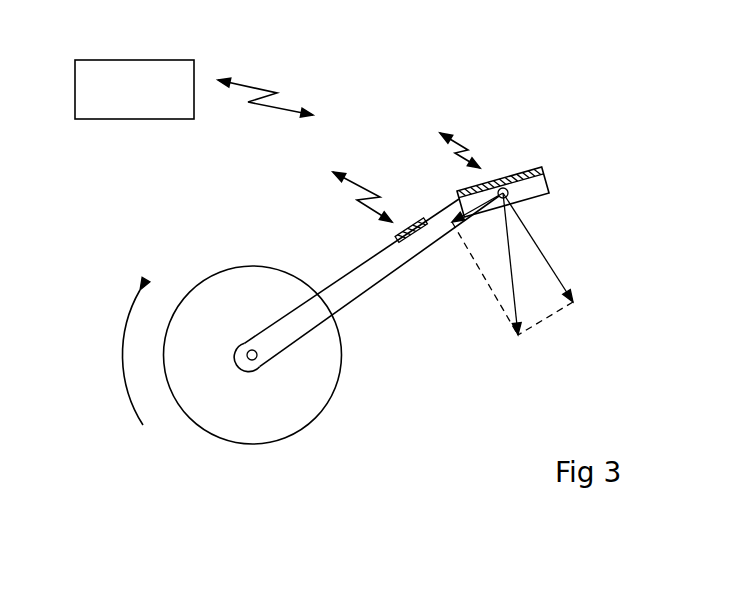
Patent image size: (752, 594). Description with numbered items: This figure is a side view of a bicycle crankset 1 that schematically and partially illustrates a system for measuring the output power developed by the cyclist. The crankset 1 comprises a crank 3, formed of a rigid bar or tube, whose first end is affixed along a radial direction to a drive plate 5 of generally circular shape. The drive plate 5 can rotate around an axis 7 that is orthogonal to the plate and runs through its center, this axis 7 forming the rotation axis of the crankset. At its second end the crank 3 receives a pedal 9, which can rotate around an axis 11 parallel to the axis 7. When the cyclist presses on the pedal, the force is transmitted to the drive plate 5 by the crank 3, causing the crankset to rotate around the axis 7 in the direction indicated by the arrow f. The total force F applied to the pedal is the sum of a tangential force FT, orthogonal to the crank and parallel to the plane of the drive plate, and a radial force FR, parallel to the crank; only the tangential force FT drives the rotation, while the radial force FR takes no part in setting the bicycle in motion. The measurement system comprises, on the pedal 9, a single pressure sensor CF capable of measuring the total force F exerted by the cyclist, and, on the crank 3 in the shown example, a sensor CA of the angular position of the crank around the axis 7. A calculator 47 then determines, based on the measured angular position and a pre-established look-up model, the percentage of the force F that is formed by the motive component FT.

The crankset 1 is at (231, 241).
The crank 3 is at (363, 288).
The drive plate 5 is at (307, 400).
The axis 7 is at (257, 362).
The pedal 9 is at (538, 183).
The axis 11 is at (513, 197).
The calculator 47 is at (93, 105).
The sensor of the angular position of the crank CA is at (417, 230).
The pressure sensor CF is at (520, 172).
The force F is at (516, 298).
The tangential force FT is at (547, 260).
The radial force FR is at (493, 217).
The arrow f is at (122, 350).